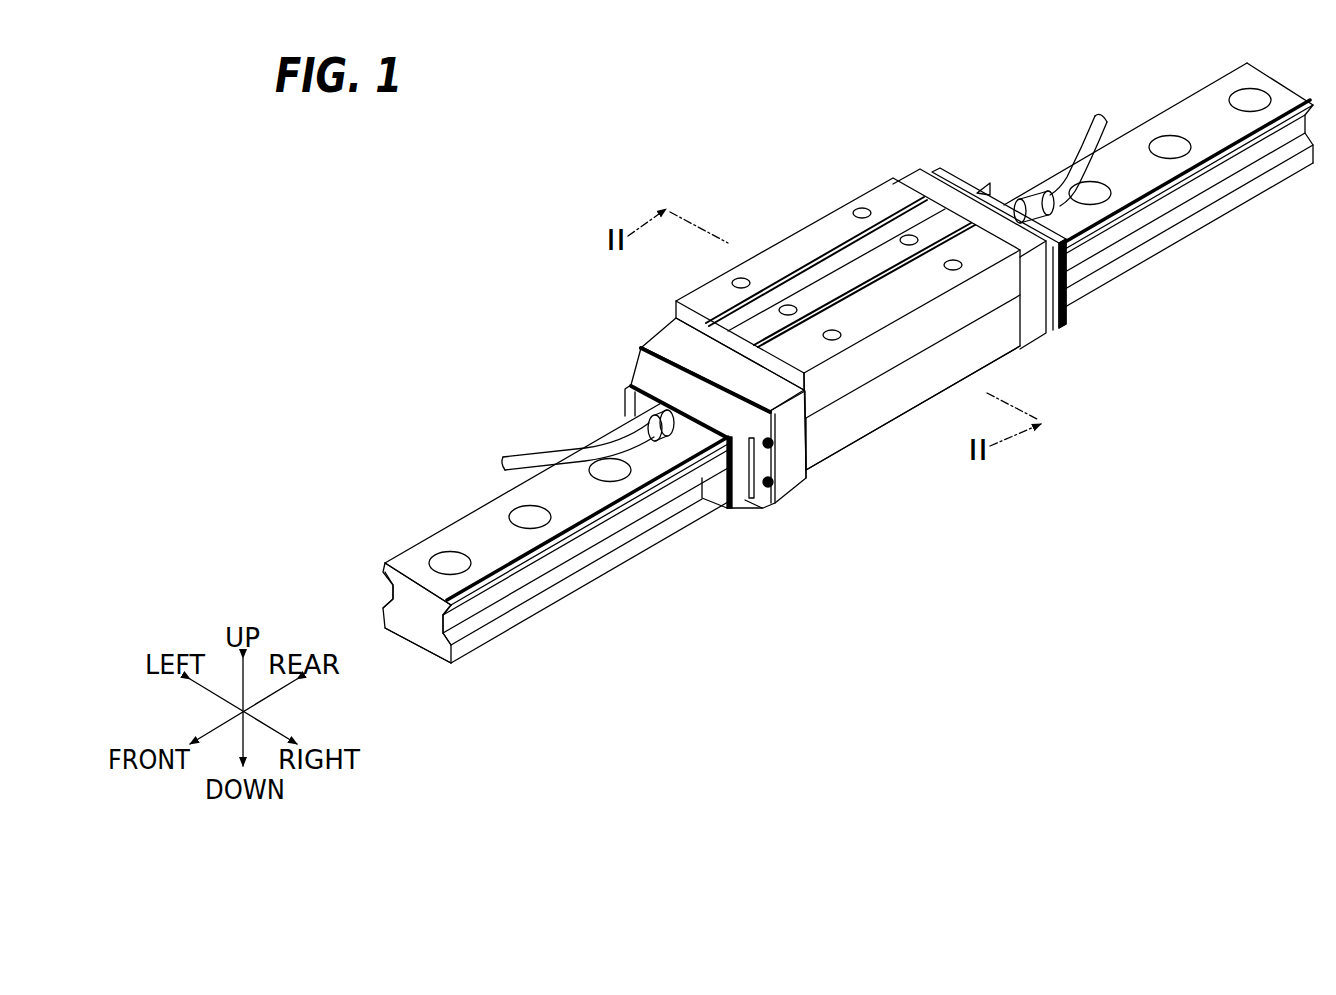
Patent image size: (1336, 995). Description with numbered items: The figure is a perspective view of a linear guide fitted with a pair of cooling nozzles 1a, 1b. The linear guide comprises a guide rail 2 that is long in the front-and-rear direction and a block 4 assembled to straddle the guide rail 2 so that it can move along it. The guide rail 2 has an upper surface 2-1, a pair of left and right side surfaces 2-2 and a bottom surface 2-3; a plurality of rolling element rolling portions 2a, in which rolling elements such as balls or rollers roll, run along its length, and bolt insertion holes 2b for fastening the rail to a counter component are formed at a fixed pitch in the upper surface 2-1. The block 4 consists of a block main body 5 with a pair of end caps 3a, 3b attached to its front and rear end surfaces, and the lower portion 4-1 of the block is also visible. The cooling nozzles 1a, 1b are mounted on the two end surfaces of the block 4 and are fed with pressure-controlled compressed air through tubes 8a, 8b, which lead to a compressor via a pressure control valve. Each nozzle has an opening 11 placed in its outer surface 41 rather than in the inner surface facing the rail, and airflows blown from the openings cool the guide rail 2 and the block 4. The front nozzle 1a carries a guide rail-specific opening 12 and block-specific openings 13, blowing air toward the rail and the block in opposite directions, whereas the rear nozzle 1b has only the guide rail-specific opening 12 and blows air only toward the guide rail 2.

The cooling nozzle 1a is at (636, 380).
The cooling nozzle 1b is at (975, 178).
The guide rail 2 is at (468, 518).
The upper surface 2-1 is at (413, 555).
The side surfaces 2-2 is at (381, 594).
The bottom surface 2-3 is at (423, 653).
The rolling element rolling portions 2a is at (543, 570).
The bolt insertion holes 2b is at (618, 482).
The end cap 3a is at (694, 338).
The end cap 3b is at (924, 180).
The block 4 is at (887, 110).
The carriage lower skirt portion 4-1 is at (812, 472).
The block main body 5 is at (813, 226).
The tube 8a is at (530, 455).
The tube 8b is at (1094, 124).
The opening 11 is at (723, 584).
The guide rail-specific opening 12 is at (733, 509).
The block-specific openings 13 is at (772, 491).
The outer surface 41 is at (665, 388).